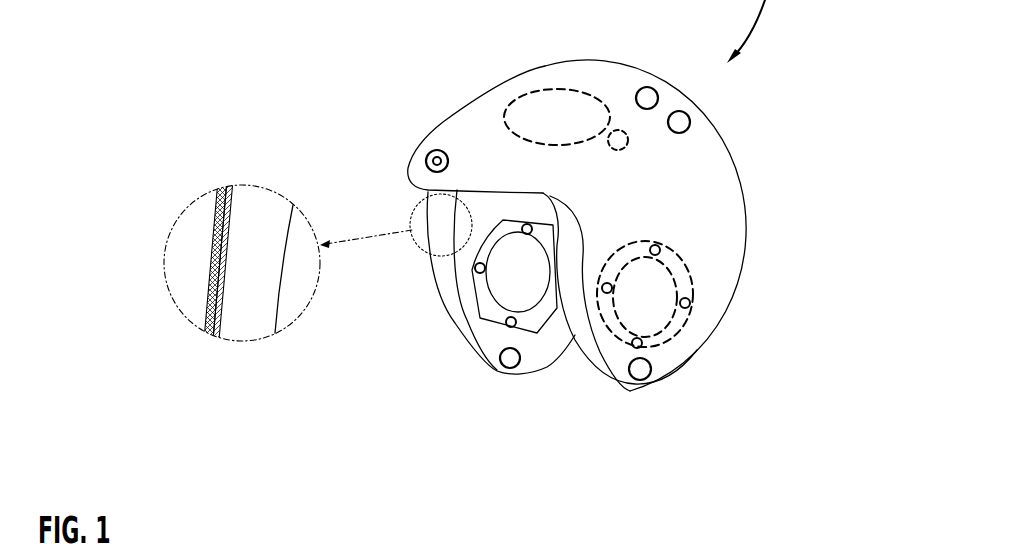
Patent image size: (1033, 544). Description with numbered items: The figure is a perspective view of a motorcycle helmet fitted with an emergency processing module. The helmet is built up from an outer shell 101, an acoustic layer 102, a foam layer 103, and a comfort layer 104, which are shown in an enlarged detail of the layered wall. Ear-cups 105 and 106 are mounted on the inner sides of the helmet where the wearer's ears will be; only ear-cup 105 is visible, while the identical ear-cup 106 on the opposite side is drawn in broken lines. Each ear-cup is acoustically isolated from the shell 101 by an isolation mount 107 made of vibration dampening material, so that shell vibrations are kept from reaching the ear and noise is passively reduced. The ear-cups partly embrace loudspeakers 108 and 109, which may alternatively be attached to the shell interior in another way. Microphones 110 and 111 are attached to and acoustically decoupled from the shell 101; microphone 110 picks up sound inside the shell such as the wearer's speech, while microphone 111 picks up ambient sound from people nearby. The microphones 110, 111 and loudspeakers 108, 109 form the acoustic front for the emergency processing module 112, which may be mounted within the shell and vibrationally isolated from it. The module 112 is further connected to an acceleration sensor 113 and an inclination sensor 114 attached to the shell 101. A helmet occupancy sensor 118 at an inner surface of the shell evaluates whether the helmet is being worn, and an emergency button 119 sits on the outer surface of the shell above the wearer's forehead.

The outer shell 101 is at (720, 202).
The acoustic layer 102 is at (210, 283).
The foam layer 103 is at (253, 222).
The comfort layer 104 is at (292, 217).
The ear-cup 105 is at (480, 281).
The ear-cup 106 is at (680, 332).
The isolation mount 107 is at (473, 266).
The loudspeaker 108 is at (500, 298).
The loudspeaker 109 is at (648, 300).
The microphone 110 is at (504, 369).
The microphone 111 is at (651, 368).
The emergency processing module 112 is at (563, 109).
The acceleration sensor 113 is at (655, 90).
The inclination sensor 114 is at (690, 122).
The helmet occupancy sensor 118 is at (628, 147).
The emergency button 119 is at (430, 153).